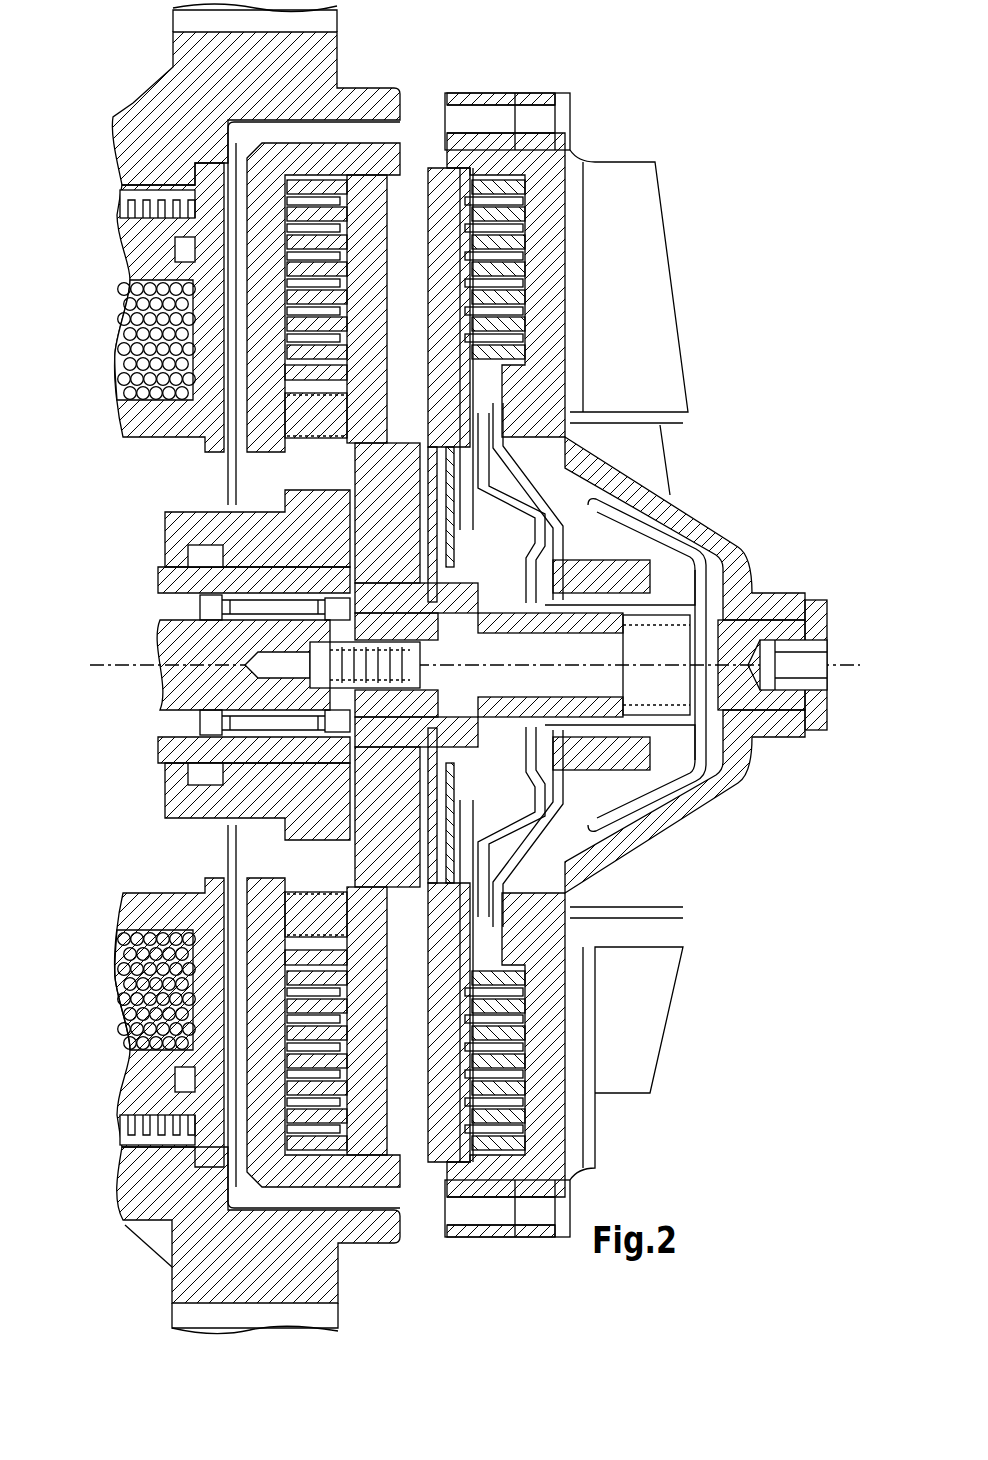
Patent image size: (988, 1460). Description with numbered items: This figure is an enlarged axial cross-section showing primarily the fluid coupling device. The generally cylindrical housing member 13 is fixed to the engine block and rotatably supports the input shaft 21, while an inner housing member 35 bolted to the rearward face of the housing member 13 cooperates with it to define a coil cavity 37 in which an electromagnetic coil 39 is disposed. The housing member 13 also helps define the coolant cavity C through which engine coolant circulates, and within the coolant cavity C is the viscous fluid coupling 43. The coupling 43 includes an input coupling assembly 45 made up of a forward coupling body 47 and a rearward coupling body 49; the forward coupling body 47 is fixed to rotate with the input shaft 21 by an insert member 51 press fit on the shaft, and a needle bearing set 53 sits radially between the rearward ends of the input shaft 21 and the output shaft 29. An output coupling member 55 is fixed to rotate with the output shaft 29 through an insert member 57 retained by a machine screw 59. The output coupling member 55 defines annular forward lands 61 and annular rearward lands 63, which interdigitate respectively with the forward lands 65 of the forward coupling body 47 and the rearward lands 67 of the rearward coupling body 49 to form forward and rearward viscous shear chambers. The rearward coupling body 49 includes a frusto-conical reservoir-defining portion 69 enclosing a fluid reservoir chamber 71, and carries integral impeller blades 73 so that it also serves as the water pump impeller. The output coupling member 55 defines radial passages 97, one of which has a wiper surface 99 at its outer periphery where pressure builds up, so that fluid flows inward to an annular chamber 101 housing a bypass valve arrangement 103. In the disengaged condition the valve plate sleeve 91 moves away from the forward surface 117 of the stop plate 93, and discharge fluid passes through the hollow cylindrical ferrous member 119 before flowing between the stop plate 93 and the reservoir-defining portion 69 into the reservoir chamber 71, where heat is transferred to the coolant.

The housing member 13 is at (175, 147).
The input shaft 21 is at (185, 585).
The output shaft 29 is at (190, 650).
The inner housing member 35 is at (205, 412).
The coil cavity 37 is at (150, 962).
The electromagnetic coil 39 is at (125, 335).
The viscous fluid coupling 43 is at (528, 50).
The input coupling assembly 45 is at (525, 95).
The forward coupling body 47 is at (283, 170).
The rearward coupling body 49 is at (553, 178).
The insert member 51 is at (235, 810).
The needle bearing set 53 is at (275, 725).
The output coupling member 55 is at (445, 1140).
The insert member 57 is at (387, 593).
The machine screw 59 is at (420, 682).
The annular forward lands 61 is at (327, 300).
The annular rearward lands 63 is at (513, 273).
The annular forward lands 65 is at (327, 200).
The annular rearward lands 67 is at (438, 362).
The reservoir-defining portion 69 is at (675, 523).
The fluid reservoir chamber 71 is at (696, 880).
The impeller blades 73 is at (655, 330).
The valve plate sleeve 91 is at (582, 583).
The stop plate 93 is at (680, 783).
The radial passages 97 is at (407, 433).
The wiper surface 99 is at (402, 1158).
The annular chamber 101 is at (420, 575).
The bypass valve arrangement 103 is at (530, 808).
The forward surface 117 is at (640, 710).
The cylindrical ferrous member 119 is at (508, 625).
The coolant cavity C is at (367, 133).